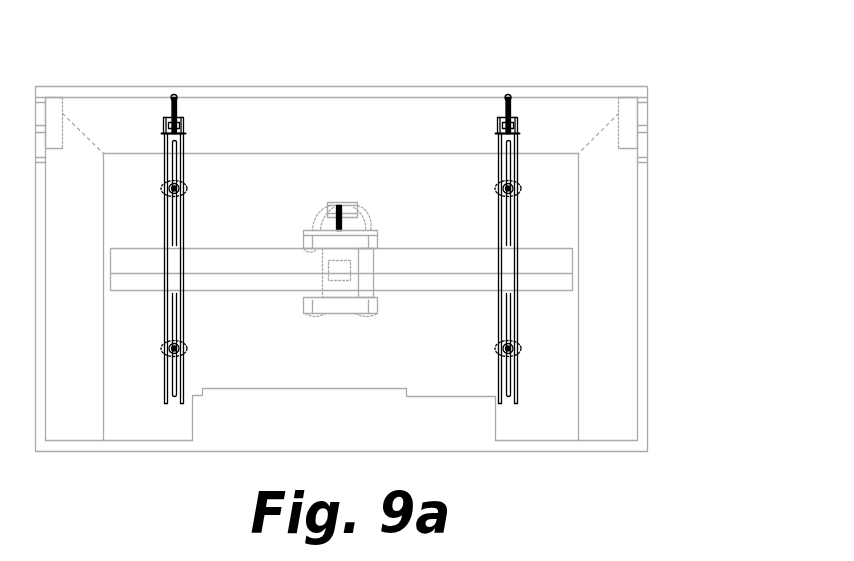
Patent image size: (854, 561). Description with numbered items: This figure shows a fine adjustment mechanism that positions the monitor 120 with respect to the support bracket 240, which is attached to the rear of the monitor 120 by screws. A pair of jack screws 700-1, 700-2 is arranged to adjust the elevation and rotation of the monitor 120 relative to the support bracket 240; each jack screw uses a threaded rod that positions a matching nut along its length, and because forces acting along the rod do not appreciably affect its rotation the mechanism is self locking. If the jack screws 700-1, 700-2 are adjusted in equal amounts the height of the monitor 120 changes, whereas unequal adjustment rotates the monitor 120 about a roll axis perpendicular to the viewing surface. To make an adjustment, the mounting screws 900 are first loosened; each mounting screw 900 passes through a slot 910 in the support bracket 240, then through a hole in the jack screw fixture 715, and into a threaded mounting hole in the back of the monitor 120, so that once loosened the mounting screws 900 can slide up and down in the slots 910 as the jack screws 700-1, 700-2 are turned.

The monitor 120 is at (662, 69).
The support bracket 240 is at (172, 405).
The jack screw 700-1 is at (166, 220).
The jack screw 700-2 is at (508, 96).
The jack screw fixture 715 is at (163, 121).
The mounting screw 900 is at (168, 188).
The slot 910 is at (176, 220).